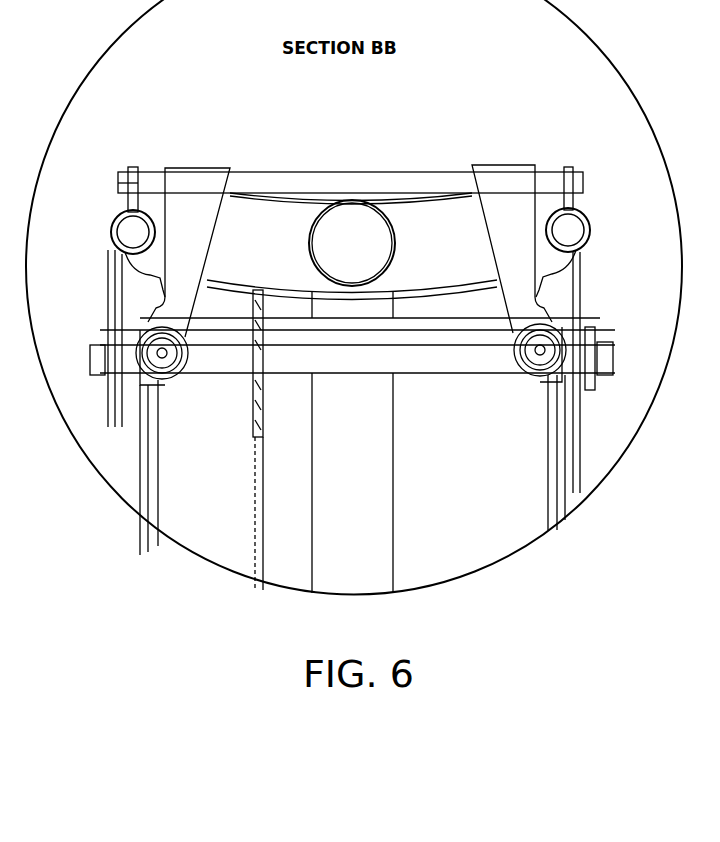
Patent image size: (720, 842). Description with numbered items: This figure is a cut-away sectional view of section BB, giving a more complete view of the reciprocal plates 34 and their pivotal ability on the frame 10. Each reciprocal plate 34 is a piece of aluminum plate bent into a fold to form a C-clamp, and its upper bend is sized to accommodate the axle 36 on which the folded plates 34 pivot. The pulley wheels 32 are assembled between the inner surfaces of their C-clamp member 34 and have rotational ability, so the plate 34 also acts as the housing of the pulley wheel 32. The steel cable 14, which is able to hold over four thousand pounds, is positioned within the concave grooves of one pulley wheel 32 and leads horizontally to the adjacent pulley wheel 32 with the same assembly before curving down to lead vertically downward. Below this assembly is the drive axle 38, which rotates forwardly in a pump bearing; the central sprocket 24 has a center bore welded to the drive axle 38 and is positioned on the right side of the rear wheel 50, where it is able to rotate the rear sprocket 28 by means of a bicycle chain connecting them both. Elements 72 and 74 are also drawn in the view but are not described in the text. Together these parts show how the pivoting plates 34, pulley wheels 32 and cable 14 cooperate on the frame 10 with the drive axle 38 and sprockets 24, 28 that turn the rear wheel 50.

The frame 10 is at (118, 215).
The steel cable 14 is at (155, 470).
The central sprocket 24 is at (265, 415).
The rear sprocket 28 is at (262, 497).
The pulley wheel 32 is at (178, 388).
The reciprocal plate (C-clamp) 34 is at (201, 225).
The axle 36 is at (300, 182).
The drive axle 38 is at (364, 372).
The rear wheel 50 is at (362, 472).
The support bar 72 is at (427, 213).
The bolt 74 is at (133, 170).